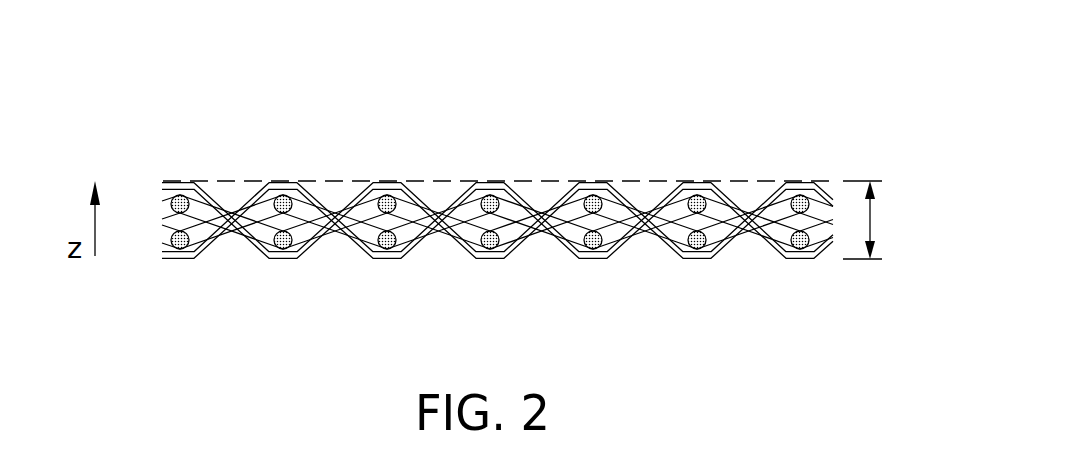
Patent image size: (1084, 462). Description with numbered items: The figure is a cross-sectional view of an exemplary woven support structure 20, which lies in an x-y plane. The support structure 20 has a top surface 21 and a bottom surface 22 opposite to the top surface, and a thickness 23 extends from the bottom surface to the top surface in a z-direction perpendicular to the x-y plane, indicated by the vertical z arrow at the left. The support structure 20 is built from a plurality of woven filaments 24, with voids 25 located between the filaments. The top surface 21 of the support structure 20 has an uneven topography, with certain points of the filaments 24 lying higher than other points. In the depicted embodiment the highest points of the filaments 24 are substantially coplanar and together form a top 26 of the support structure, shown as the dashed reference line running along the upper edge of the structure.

The support structure 20 is at (437, 124).
The top surface 21 is at (603, 147).
The bottom surface 22 is at (615, 290).
The thickness 23 is at (871, 222).
The filaments 24 is at (290, 192).
The voids 25 is at (338, 222).
The top 26 is at (823, 181).